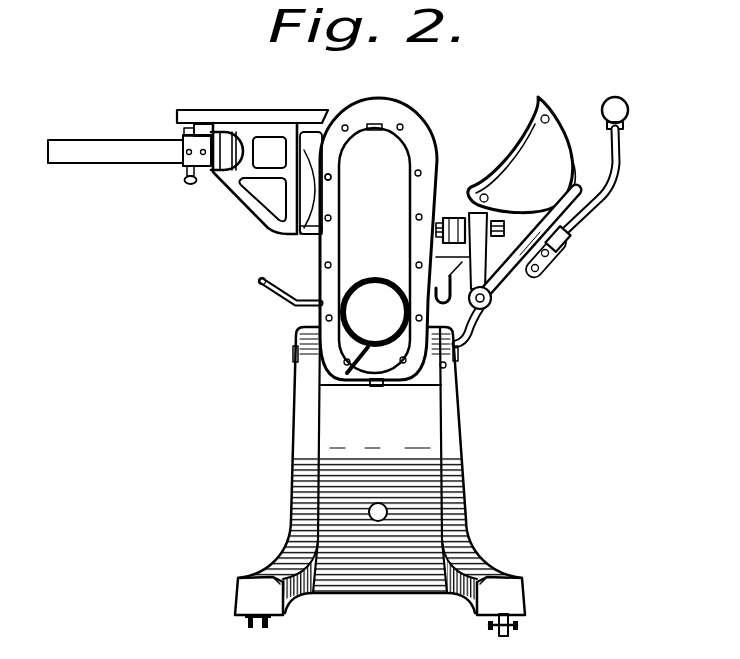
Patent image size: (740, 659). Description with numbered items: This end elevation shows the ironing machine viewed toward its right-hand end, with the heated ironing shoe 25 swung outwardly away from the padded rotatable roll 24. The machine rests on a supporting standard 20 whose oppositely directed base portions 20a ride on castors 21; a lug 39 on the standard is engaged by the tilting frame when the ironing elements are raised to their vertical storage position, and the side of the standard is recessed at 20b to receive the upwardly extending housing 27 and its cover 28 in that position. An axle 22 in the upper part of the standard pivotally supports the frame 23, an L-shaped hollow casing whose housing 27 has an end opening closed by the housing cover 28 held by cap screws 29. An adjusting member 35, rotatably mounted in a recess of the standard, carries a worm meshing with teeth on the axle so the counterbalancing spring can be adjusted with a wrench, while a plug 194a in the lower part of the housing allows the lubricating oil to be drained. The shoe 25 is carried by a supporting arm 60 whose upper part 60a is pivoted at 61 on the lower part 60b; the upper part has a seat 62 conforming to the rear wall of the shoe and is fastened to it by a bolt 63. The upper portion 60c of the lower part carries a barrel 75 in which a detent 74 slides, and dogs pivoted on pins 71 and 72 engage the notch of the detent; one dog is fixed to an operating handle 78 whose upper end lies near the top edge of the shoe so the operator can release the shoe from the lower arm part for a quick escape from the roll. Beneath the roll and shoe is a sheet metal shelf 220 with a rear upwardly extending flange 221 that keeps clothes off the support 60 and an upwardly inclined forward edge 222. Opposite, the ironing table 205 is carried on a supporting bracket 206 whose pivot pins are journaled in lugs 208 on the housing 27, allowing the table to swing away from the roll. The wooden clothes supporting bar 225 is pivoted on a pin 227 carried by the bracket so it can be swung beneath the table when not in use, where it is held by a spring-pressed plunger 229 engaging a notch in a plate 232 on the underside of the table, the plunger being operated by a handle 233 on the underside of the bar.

The supporting standard 20 is at (468, 428).
The base portions 20a is at (603, 592).
The recess 20b is at (338, 436).
The castors 21 is at (255, 635).
The axle 22 is at (293, 357).
The frame 23 is at (316, 274).
The rotatable roll 24 is at (380, 150).
The heated ironing shoe 25 is at (575, 93).
The upwardly extending housing 27 is at (313, 191).
The housing cover 28 is at (374, 250).
The cap screws 29 is at (416, 172).
The adjusting member 35 is at (449, 366).
The lug 39 is at (378, 521).
The supporting arm 60 is at (490, 334).
The upper part of supporting arm 60a is at (574, 310).
The lower part of supporting arm 60b is at (484, 325).
The upper portion of lower arm part 60c is at (522, 281).
The pivot 61 is at (493, 305).
The seat 62 is at (583, 187).
The bolt 63 is at (580, 207).
The pin 71 is at (550, 254).
The pin 72 is at (539, 269).
The detent 74 is at (496, 224).
The barrel 75 is at (453, 217).
The operating handle 78 is at (622, 149).
The plug 194a is at (403, 417).
The table 205 is at (258, 110).
The supporting bracket 206 is at (243, 211).
The lugs 208 is at (326, 177).
The sheet metal shelf 220 is at (315, 297).
The upwardly extending flange 221 is at (440, 283).
The inclined forward edge 222 is at (261, 285).
The clothes supporting bar 225 is at (60, 140).
The pin 227 is at (212, 157).
The plunger 229 is at (184, 132).
The plate 232 is at (215, 124).
The handle 233 is at (186, 180).